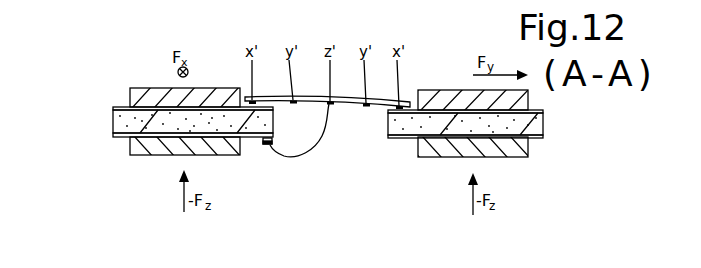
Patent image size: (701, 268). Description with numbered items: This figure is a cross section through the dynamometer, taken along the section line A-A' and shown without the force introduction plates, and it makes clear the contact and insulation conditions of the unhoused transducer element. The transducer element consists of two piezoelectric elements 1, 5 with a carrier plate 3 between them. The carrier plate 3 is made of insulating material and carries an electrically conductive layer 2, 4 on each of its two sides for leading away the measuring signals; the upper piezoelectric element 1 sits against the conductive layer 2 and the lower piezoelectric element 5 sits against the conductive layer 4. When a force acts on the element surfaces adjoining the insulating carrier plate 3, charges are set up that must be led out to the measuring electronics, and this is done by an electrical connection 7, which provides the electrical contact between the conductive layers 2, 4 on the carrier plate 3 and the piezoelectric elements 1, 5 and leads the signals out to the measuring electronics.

The piezoelectric element 1 is at (160, 95).
The electrically conductive layer 2 is at (140, 107).
The carrier plate 3 is at (128, 121).
The electrically conductive layer 4 is at (137, 137).
The piezoelectric element 5 is at (155, 146).
The electrical connection 7 is at (266, 147).